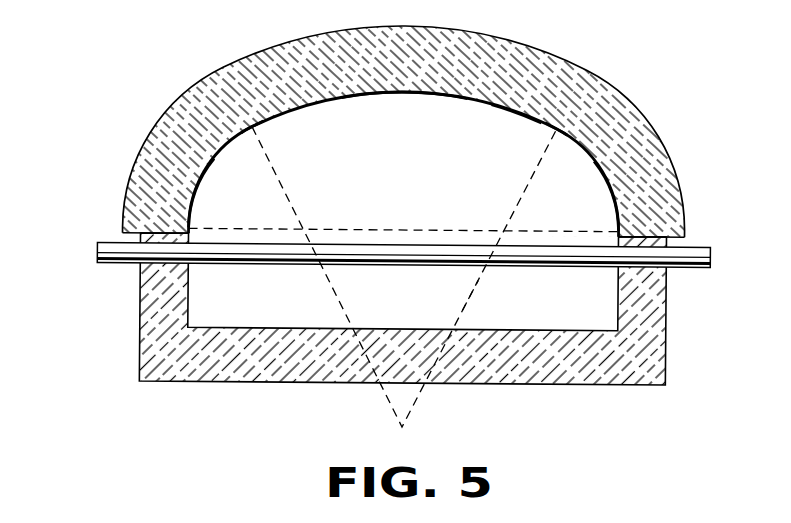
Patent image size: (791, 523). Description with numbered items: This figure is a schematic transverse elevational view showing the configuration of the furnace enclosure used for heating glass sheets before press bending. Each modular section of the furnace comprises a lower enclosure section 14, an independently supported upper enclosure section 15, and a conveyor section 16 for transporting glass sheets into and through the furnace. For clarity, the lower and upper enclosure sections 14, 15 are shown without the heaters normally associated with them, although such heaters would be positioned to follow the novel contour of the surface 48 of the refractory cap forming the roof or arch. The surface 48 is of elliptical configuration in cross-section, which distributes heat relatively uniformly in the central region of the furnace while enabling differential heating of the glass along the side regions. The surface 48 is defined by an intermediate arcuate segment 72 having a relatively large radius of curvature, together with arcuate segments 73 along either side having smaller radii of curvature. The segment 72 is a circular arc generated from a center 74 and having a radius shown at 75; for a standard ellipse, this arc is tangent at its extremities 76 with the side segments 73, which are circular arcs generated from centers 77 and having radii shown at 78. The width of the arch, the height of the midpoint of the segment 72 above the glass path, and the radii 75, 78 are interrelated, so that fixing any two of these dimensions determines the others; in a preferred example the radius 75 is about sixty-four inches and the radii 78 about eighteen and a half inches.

The lower enclosure section 14 is at (211, 385).
The upper enclosure section 15 is at (229, 62).
The conveyor section 16 is at (93, 257).
The surface 48 is at (511, 109).
The intermediate arcuate segment 72 is at (361, 95).
The arcuate segments 73 is at (203, 178).
The center 74 is at (404, 427).
The radius 75 is at (472, 290).
The extremities 76 is at (252, 129).
The centers 77 is at (303, 230).
The radii 78 is at (233, 236).